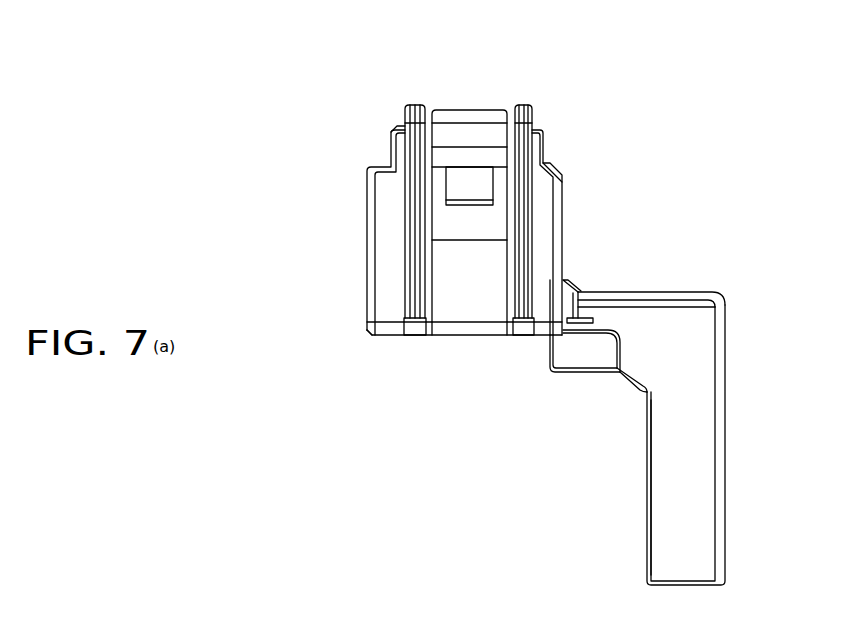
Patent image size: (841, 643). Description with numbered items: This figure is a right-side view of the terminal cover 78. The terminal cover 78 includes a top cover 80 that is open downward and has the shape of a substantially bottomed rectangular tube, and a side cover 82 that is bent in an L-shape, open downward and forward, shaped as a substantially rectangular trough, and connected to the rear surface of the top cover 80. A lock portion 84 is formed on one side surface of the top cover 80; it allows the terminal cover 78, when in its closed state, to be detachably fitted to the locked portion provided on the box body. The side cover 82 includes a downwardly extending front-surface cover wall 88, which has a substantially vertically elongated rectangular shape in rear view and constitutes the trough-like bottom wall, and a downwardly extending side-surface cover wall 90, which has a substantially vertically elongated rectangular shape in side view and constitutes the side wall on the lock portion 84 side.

The terminal cover 78 is at (481, 68).
The top cover 80 is at (572, 100).
The side cover 82 is at (734, 270).
The lock portion 84 is at (477, 232).
The front-surface cover wall 88 is at (723, 413).
The side-surface cover wall 90 is at (692, 495).